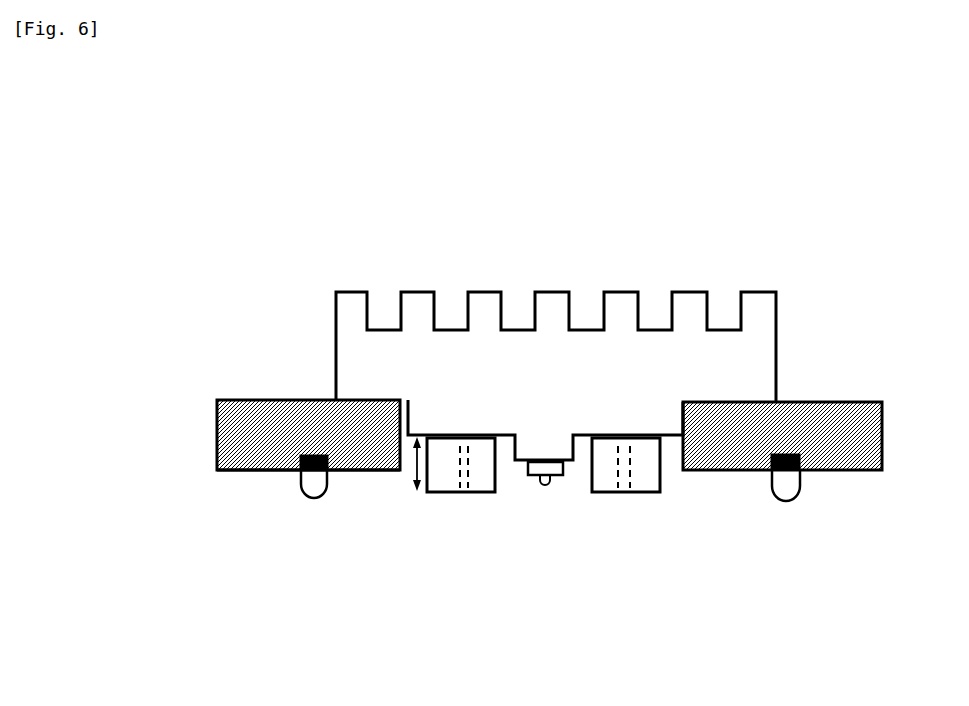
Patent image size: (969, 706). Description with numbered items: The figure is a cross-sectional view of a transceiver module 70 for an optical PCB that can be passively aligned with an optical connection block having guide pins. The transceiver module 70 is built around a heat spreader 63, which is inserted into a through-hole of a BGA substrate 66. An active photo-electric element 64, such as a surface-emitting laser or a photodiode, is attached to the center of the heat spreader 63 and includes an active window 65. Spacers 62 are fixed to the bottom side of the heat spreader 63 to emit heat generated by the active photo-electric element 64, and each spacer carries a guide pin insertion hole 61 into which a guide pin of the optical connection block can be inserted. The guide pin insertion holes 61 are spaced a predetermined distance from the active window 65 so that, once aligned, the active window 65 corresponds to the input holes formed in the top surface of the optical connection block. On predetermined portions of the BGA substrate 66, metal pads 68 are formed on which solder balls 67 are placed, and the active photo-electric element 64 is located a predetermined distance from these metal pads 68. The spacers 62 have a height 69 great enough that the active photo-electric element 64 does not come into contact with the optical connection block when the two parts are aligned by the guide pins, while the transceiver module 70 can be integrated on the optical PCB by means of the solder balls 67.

The transceiver module 70 is at (498, 311).
The heat spreader 63 is at (360, 362).
The BGA substrate 66 is at (303, 418).
The metal pads 68 is at (262, 468).
The solder balls 67 is at (315, 492).
The height 69 is at (408, 472).
The guide pin insertion holes 61 is at (458, 486).
The spacers 62 is at (651, 472).
The active photo-electric element 64 is at (528, 463).
The active window 65 is at (548, 482).